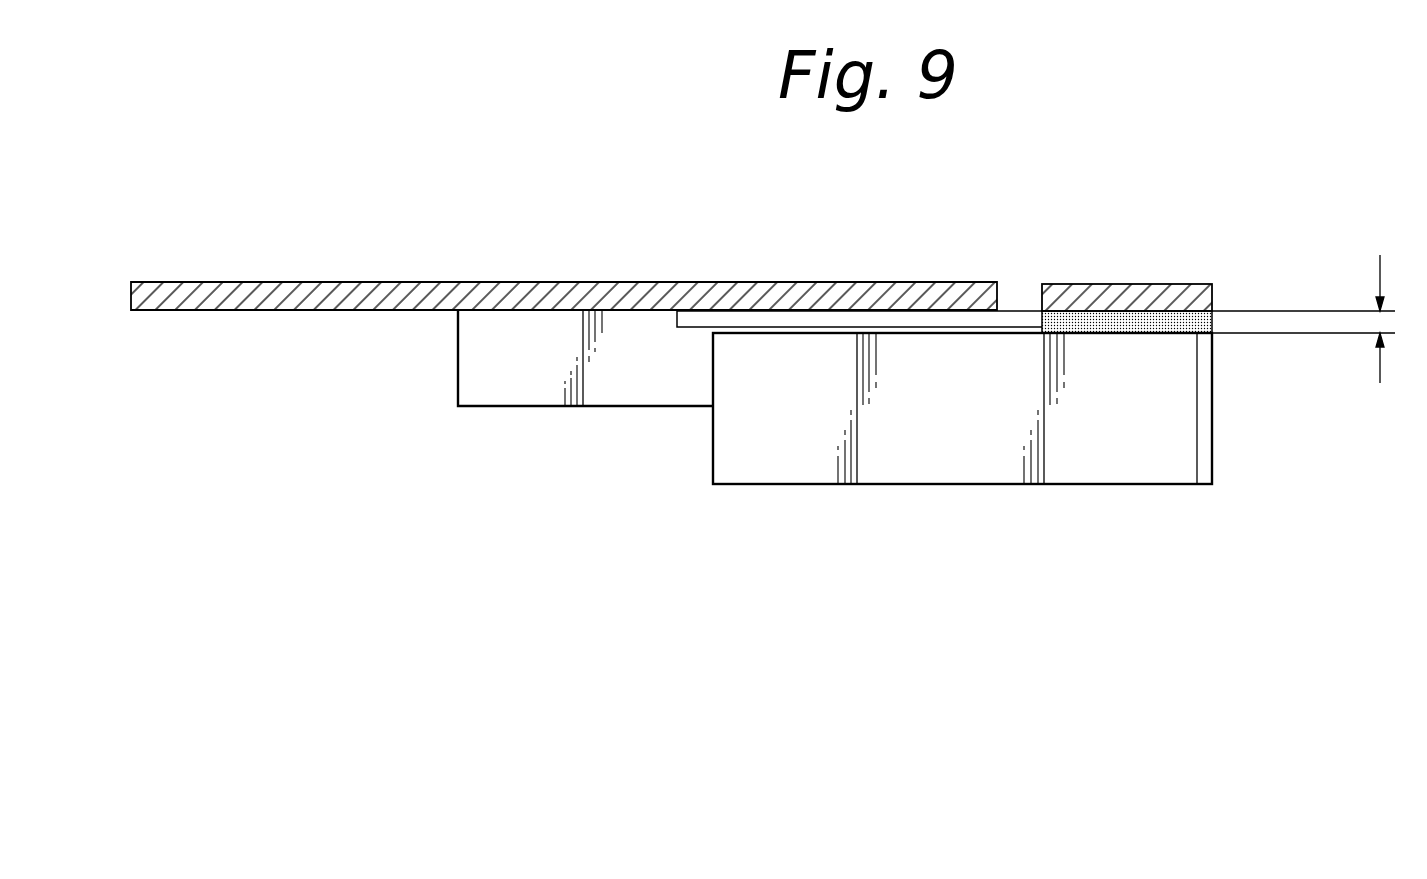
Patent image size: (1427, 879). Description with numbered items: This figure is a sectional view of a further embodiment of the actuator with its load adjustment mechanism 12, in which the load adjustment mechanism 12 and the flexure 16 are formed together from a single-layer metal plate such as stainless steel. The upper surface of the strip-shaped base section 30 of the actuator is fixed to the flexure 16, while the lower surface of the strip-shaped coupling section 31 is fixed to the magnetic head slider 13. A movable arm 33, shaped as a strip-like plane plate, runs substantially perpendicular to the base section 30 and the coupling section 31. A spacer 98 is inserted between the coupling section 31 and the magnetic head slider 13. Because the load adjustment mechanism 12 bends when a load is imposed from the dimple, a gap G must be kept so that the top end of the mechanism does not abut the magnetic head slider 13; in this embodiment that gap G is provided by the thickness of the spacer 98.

The flexure 16 is at (413, 288).
The base section 30 is at (613, 290).
The load adjustment mechanism 12 is at (893, 290).
The coupling section 31 is at (1117, 290).
The spacer 98 is at (1198, 325).
The movable arm 33 is at (610, 387).
The magnetic head slider 13 is at (968, 468).
The gap G is at (1319, 319).